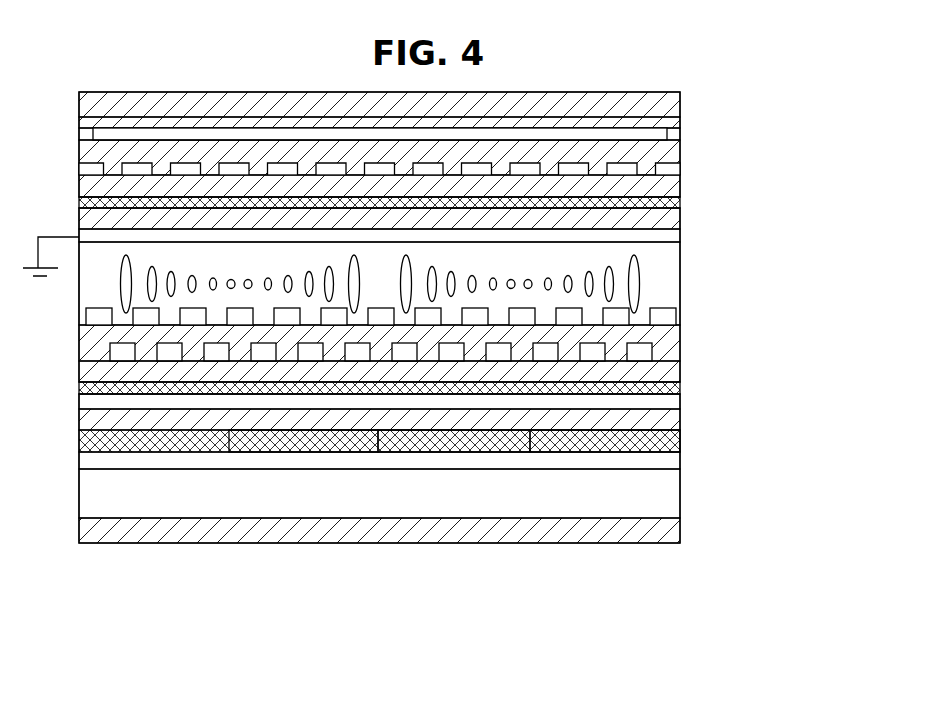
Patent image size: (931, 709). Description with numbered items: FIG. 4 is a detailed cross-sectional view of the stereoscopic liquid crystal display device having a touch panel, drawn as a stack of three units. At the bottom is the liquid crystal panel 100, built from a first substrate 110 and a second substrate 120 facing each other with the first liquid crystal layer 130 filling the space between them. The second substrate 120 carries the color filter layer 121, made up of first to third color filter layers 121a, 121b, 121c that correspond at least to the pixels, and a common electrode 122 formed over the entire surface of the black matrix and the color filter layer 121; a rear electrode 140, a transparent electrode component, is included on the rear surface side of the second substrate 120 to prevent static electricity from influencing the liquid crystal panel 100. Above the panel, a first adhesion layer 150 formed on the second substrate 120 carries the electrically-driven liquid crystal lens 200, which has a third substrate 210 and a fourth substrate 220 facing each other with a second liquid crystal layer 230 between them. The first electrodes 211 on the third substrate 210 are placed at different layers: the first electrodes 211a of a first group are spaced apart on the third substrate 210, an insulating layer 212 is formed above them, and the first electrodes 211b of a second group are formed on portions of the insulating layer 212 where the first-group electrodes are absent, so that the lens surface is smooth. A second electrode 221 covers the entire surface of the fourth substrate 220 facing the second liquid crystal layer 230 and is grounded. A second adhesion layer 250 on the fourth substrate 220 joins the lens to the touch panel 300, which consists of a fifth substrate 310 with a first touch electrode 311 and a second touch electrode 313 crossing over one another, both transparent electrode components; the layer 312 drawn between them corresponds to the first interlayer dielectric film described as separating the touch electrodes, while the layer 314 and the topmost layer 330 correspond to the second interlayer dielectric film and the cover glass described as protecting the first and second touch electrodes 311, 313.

The liquid crystal panel 100 is at (428, 534).
The first substrate 110 is at (414, 531).
The second substrate 120 is at (682, 423).
The color filter layer 121 is at (379, 553).
The first color filter layer 121a is at (605, 521).
The second color filter layer 121b is at (445, 440).
The third color filter layer 121c is at (305, 440).
The common electrode 122 is at (682, 460).
The first liquid crystal layer 130 is at (682, 495).
The rear electrode 140 is at (682, 400).
The first adhesion layer 150 is at (95, 389).
The electrically-driven liquid crystal lens 200 is at (430, 295).
The third substrate 210 is at (414, 370).
The first electrodes 211 is at (437, 334).
The first electrodes of a first group 211a is at (656, 348).
The first electrodes of a second group 211b is at (666, 318).
The insulating layer 212 is at (98, 345).
The fourth substrate 220 is at (682, 221).
The second electrode 221 is at (682, 240).
The second liquid crystal layer 230 is at (682, 271).
The second adhesion layer 250 is at (682, 202).
The touch panel 300 is at (428, 144).
The fifth substrate 310 is at (682, 182).
The first touch electrode 311 is at (682, 163).
The insulating layer 312 is at (682, 141).
The second touch electrode 313 is at (91, 133).
The protective layer 314 is at (682, 121).
The cover window 330 is at (682, 102).